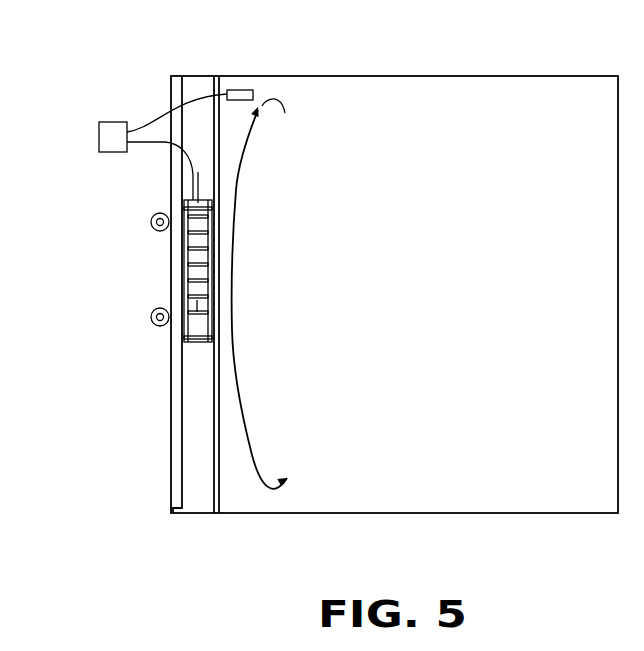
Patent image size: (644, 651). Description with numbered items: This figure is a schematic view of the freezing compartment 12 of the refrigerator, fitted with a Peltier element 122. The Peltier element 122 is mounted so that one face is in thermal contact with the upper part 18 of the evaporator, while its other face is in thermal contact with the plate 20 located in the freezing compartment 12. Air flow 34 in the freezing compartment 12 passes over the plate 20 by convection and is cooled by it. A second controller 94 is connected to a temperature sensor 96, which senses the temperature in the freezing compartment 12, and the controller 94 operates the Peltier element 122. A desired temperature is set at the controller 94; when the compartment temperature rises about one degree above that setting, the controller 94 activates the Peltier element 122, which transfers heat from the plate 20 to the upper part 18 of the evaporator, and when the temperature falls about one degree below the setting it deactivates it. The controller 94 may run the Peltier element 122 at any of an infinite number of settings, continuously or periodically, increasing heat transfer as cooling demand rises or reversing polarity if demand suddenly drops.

The freezing compartment 12 is at (503, 406).
The upper part of the evaporator 18 is at (153, 214).
The heat transfer plate 20 is at (219, 489).
The air circulation 34 is at (279, 101).
The second controller 94 is at (112, 122).
The temperature sensor 96 is at (241, 90).
The Peltier element 122 is at (197, 300).